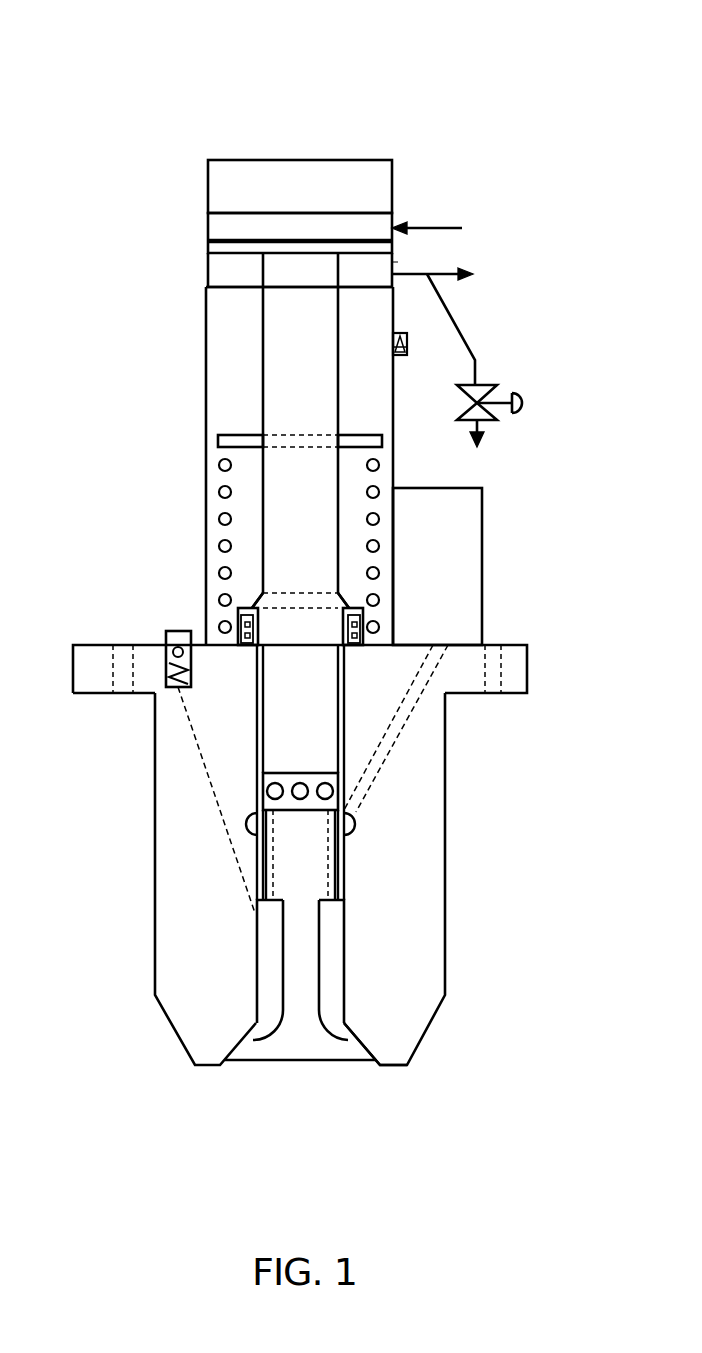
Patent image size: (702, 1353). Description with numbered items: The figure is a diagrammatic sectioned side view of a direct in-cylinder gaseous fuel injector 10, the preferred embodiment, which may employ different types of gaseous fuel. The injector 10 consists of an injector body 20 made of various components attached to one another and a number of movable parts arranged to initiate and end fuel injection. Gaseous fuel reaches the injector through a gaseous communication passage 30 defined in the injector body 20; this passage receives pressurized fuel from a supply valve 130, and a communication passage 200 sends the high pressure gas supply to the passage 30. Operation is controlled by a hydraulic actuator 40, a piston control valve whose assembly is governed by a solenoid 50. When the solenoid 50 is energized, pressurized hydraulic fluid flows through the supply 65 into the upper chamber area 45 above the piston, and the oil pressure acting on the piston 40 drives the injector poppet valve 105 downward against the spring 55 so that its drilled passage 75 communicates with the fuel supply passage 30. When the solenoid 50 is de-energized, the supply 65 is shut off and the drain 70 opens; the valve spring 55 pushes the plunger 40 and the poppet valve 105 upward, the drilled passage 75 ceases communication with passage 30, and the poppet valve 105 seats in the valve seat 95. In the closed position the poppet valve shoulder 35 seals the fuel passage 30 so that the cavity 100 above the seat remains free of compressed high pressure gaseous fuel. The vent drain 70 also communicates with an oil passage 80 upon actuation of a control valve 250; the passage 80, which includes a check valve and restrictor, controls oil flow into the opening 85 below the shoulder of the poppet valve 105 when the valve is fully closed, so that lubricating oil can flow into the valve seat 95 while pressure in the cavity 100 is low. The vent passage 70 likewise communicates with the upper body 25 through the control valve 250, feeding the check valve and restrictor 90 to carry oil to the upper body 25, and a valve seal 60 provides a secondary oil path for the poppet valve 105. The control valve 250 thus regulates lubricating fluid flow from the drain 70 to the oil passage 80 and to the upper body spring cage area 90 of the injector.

The gaseous fuel injector 10 is at (95, 68).
The injector body 20 is at (155, 762).
The upper body 25 is at (395, 262).
The gaseous communication passage 30 is at (397, 743).
The poppet valve shoulder 35 is at (347, 885).
The hydraulic actuator 40 is at (262, 275).
The upper chamber area 45 is at (218, 229).
The solenoid 50 is at (210, 190).
The spring 55 is at (374, 492).
The valve seal 60 is at (262, 596).
The pressurized hydraulic fluid supply 65 is at (440, 228).
The drain 70 is at (455, 272).
The drilled passage 75 is at (325, 791).
The oil passage 80 is at (172, 630).
The oil passage opening 85 is at (250, 895).
The check valve and restrictor 90 is at (408, 343).
The valve seat 95 is at (370, 1048).
The cavity 100 is at (380, 959).
The injector poppet valve 105 is at (320, 932).
The supply valve 130 is at (475, 556).
The communication passage 200 is at (483, 588).
The control valve 250 is at (488, 385).